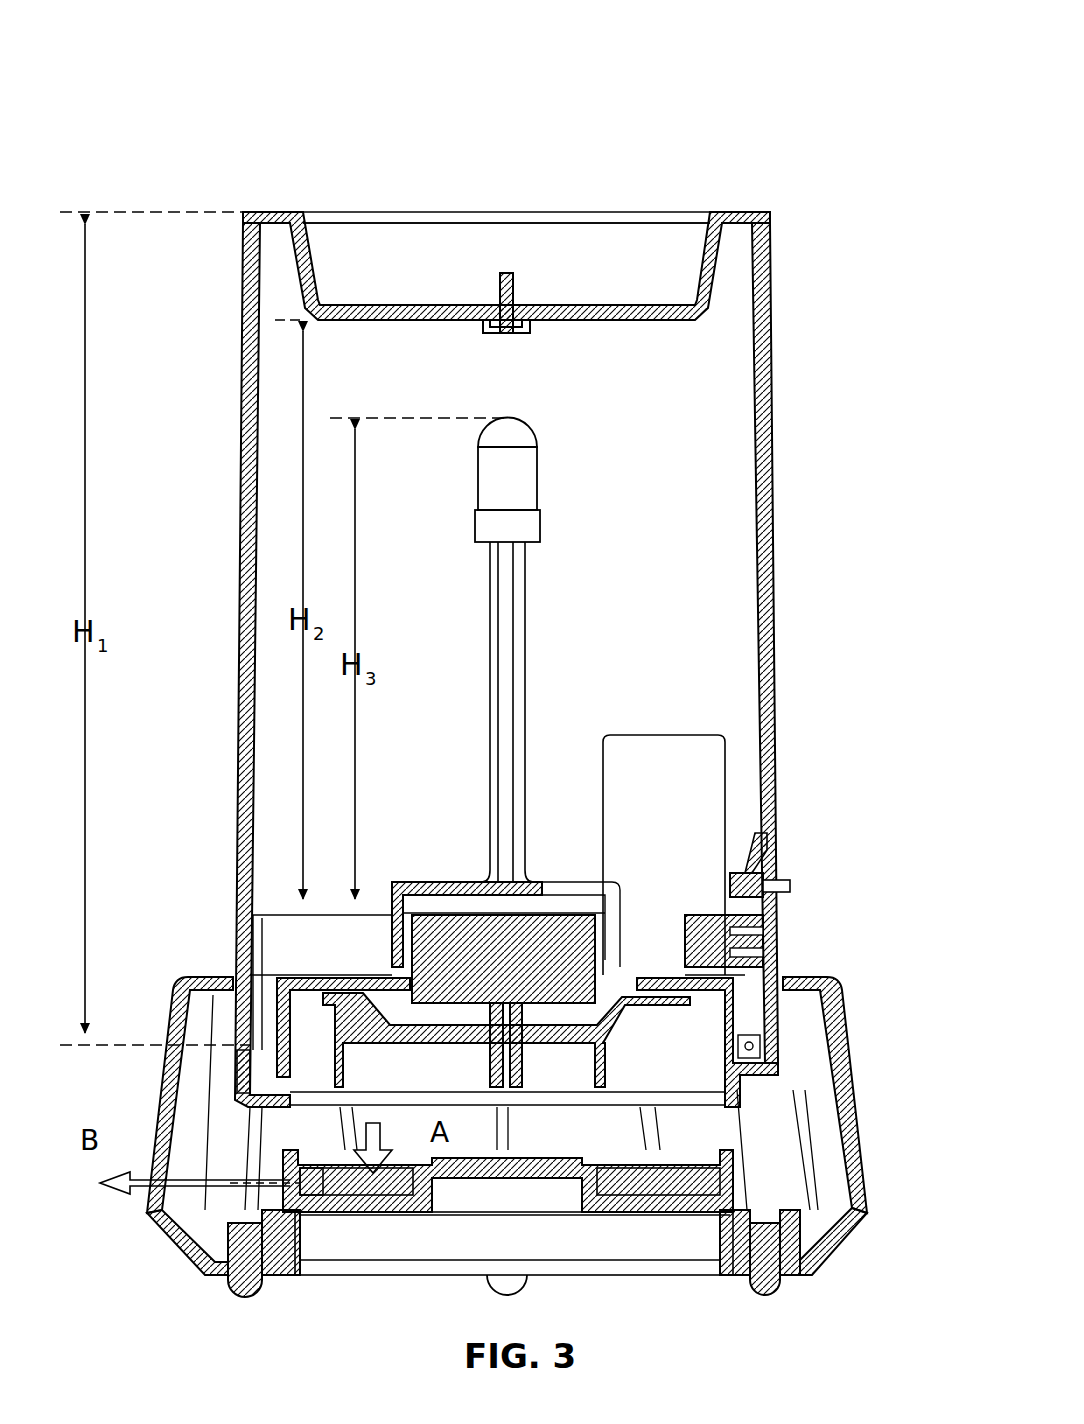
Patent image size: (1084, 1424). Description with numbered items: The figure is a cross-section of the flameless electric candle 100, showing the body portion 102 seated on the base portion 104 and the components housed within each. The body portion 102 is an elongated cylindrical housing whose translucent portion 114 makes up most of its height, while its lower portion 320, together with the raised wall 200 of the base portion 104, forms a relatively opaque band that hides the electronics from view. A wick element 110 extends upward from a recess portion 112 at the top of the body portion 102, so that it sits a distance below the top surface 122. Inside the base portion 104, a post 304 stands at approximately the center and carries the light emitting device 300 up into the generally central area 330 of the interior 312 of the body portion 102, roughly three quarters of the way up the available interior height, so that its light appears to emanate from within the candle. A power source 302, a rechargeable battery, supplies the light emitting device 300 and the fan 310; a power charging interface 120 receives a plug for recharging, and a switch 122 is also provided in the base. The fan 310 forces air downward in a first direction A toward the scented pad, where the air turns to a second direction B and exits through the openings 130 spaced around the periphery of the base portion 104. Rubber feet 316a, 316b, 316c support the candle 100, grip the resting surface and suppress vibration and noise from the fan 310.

The candle 100 is at (785, 60).
The body portion 102 is at (775, 486).
The base portion 104 is at (835, 1020).
The wick element 110 is at (515, 290).
The recess portion 112 is at (347, 233).
The translucent portion 114 is at (800, 636).
The power charging interface 120 is at (775, 935).
The switch 122 is at (422, 305).
The openings 130 is at (185, 1150).
The raised wall 200 is at (392, 905).
The light emitting device 300 is at (490, 480).
The power source 302 is at (664, 855).
The post 304 is at (497, 648).
The fan 310 is at (620, 1128).
The interior 312 is at (285, 398).
The rubber foot 316a is at (258, 1287).
The rubber foot 316b is at (520, 1290).
The rubber foot 316c is at (782, 1287).
The lower portion 320 is at (232, 940).
The central area 330 is at (552, 404).